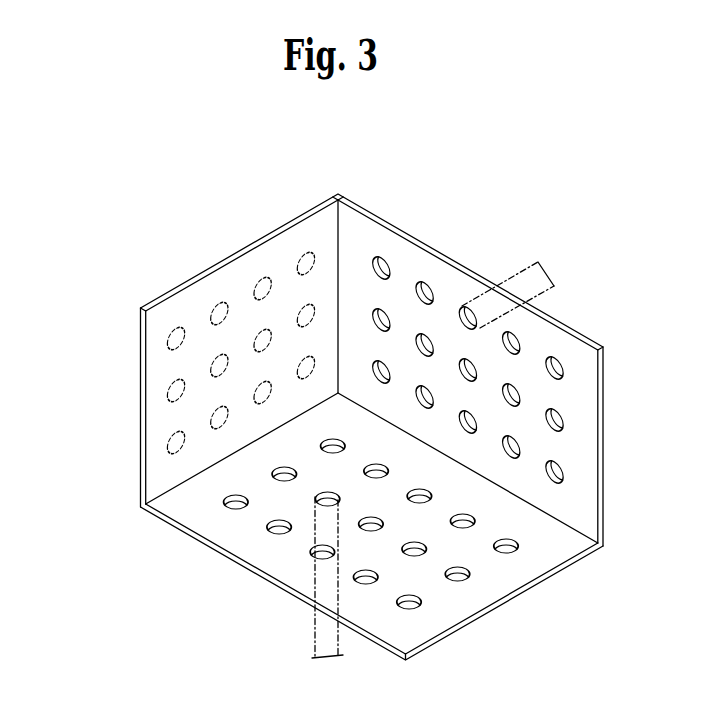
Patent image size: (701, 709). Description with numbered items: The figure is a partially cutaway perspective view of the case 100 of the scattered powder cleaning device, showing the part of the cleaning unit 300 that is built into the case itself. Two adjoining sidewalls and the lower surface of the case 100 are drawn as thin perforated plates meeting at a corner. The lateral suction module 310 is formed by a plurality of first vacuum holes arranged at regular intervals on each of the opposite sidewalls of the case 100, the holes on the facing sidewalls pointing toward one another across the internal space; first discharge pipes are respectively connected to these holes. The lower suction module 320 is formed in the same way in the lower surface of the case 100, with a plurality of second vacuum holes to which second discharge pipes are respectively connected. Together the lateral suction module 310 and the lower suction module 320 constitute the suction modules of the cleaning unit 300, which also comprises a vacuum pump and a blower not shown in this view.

The cleaning unit 300 is at (331, 398).
The case 100 is at (486, 348).
The lateral suction module 310 is at (240, 352).
The lower suction module 320 is at (315, 540).